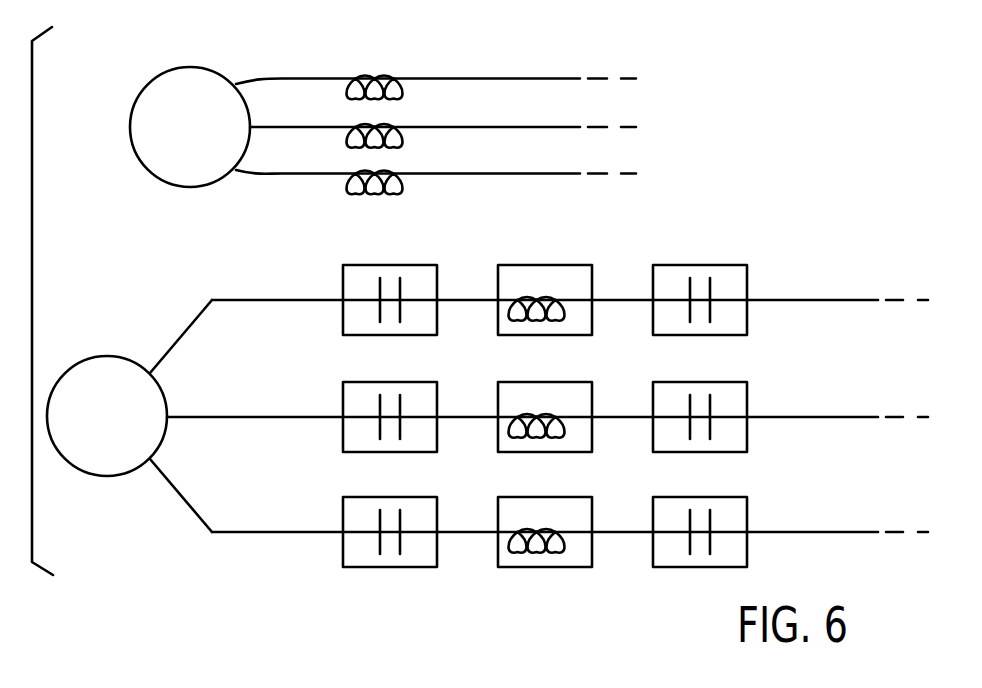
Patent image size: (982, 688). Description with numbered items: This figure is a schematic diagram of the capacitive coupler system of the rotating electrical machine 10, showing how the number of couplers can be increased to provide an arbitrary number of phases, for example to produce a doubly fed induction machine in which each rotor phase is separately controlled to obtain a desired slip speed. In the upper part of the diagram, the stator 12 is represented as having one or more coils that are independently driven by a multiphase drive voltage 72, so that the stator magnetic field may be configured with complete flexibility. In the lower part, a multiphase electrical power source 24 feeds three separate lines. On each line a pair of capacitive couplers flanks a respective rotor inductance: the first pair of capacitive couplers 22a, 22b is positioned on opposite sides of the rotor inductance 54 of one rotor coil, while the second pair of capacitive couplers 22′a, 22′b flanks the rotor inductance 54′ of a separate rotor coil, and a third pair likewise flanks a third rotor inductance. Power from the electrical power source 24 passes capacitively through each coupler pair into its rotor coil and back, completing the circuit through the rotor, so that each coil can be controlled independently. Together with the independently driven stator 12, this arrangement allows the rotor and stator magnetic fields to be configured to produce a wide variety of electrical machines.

The rotating electrical machine 10 is at (147, 50).
The stator 12 is at (485, 55).
The multiphase drive voltage 72 is at (205, 141).
The electrical power source 24 is at (121, 434).
The capacitive coupler 22a is at (343, 315).
The capacitive coupler 22′a is at (343, 432).
The rotor inductance 54 is at (543, 265).
The rotor inductance 54′ is at (543, 382).
The capacitive coupler 22b is at (747, 316).
The capacitive coupler 22′b is at (747, 433).